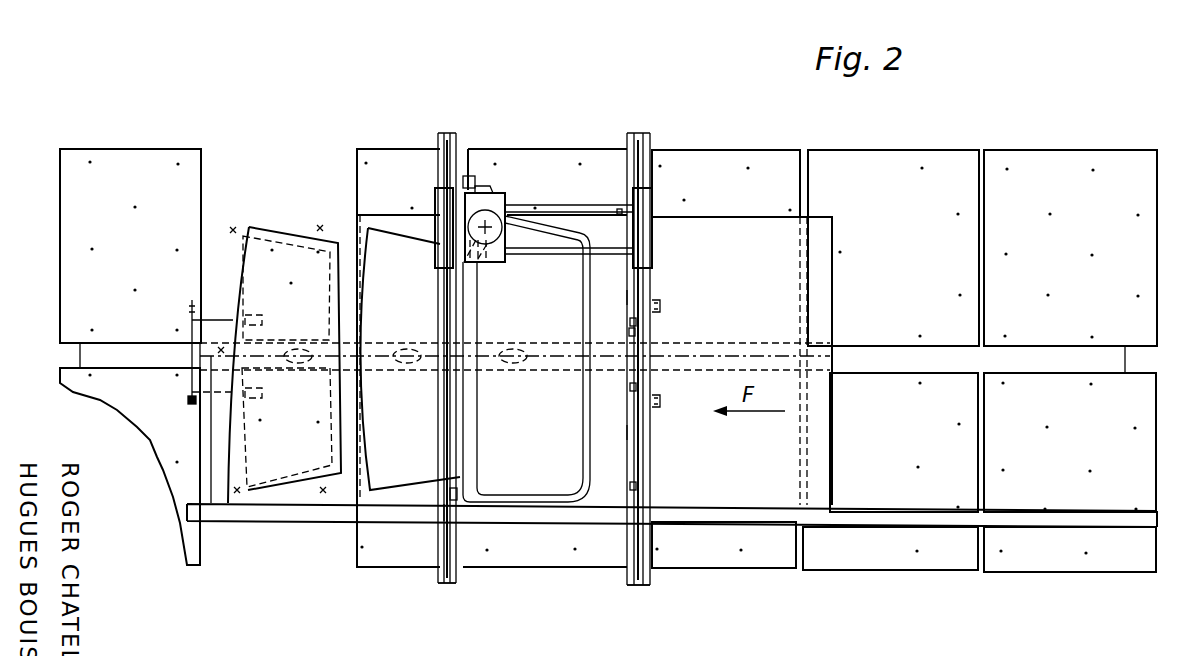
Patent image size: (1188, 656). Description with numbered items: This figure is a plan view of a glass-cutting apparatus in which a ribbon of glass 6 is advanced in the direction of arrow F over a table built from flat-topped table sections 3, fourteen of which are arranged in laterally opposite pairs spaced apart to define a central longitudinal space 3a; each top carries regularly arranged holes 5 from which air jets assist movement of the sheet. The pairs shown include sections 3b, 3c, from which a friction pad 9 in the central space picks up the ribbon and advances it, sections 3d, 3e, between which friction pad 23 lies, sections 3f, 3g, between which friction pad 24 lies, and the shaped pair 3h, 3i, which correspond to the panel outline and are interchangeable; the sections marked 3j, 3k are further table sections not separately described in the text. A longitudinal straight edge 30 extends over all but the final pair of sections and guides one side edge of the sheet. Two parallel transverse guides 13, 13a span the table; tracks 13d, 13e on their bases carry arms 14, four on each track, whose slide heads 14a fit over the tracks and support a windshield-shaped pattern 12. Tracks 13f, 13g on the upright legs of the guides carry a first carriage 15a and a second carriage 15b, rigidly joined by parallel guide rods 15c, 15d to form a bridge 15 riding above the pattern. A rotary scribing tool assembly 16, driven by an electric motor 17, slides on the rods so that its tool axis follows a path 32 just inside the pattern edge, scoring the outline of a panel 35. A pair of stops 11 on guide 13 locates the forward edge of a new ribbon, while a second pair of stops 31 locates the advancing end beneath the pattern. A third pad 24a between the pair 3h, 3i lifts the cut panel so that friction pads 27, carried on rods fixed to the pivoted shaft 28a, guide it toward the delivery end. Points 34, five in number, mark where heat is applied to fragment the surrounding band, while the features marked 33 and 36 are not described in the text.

The table section 3 is at (1001, 160).
The central longitudinal space 3a is at (870, 358).
The table section 3b is at (706, 565).
The table section 3c is at (730, 158).
The table section 3d is at (568, 158).
The table section 3e is at (528, 562).
The table section 3f is at (388, 157).
The table section 3g is at (392, 570).
The table section 3h is at (262, 266).
The table section 3i is at (287, 439).
The frame plate 3j is at (137, 160).
The frame plate 3k is at (62, 368).
The holes 5 is at (964, 213).
The glass sheet 6 is at (820, 452).
The friction pad 9 is at (714, 349).
The stops 11 is at (660, 305).
The pattern 12 is at (579, 230).
The transverse guide 13 is at (627, 297).
The transverse guide 13a is at (457, 518).
The track 13d is at (627, 432).
The track 13e is at (455, 570).
The track 13f is at (651, 143).
The track 13g is at (441, 140).
The arms 14 is at (592, 228).
The slide head 14a is at (629, 334).
The bridge 15 is at (518, 212).
The first carriage 15a is at (650, 238).
The second carriage 15b is at (436, 232).
The guide rod 15c is at (548, 204).
The guide rod 15d is at (552, 256).
The rotary cutting tool assembly 16 is at (492, 262).
The electric motor 17 is at (486, 226).
The friction pad 23 is at (512, 364).
The friction pad 24 is at (406, 364).
The third friction pad 24a is at (298, 364).
The friction pads 27 is at (285, 313).
The shaft 28a is at (192, 353).
The straight edge 30 is at (897, 518).
The stops 31 is at (468, 319).
The path 32 is at (577, 312).
The hidden edge 33 is at (358, 225).
The points 34 is at (318, 226).
The panel 35 is at (255, 452).
The plate 36 is at (398, 485).